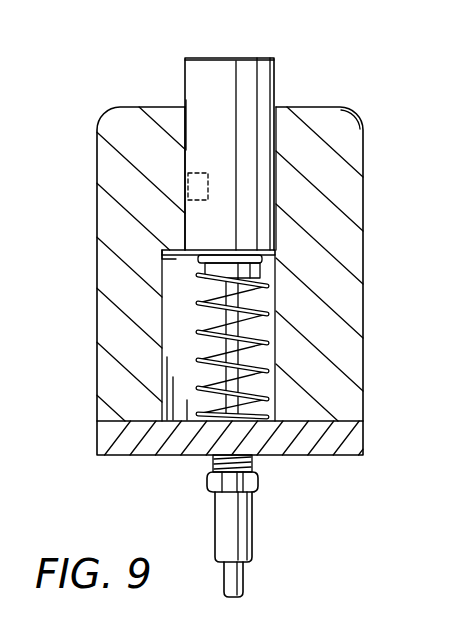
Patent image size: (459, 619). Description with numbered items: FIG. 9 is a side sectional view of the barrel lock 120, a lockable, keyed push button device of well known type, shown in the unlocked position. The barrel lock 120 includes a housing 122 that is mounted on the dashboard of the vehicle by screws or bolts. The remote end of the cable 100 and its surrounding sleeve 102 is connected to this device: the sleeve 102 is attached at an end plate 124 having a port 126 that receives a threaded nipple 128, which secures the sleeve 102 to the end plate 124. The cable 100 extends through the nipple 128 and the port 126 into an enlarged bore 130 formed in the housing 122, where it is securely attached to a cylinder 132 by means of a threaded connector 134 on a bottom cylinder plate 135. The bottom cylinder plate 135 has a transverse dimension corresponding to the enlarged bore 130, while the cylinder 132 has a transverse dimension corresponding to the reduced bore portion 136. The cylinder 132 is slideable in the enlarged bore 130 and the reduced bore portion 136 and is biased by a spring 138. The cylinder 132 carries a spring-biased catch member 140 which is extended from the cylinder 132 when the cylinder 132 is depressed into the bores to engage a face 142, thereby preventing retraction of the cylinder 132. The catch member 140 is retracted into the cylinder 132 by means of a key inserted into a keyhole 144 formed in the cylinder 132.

The cable 100 is at (240, 577).
The sleeve 102 is at (247, 520).
The barrel lock 120 is at (342, 77).
The housing 122 is at (347, 157).
The end plate 124 is at (355, 438).
The port 126 is at (213, 457).
The threaded nipple 128 is at (258, 482).
The enlarged bore 130 is at (167, 350).
The cylinder 132 is at (246, 65).
The threaded connector 134 is at (263, 270).
The bottom cylinder plate 135 is at (182, 250).
The reduced bore portion 136 is at (188, 125).
The spring 138 is at (267, 342).
The catch member 140 is at (187, 187).
The face 142 is at (174, 259).
The keyhole 144 is at (205, 58).